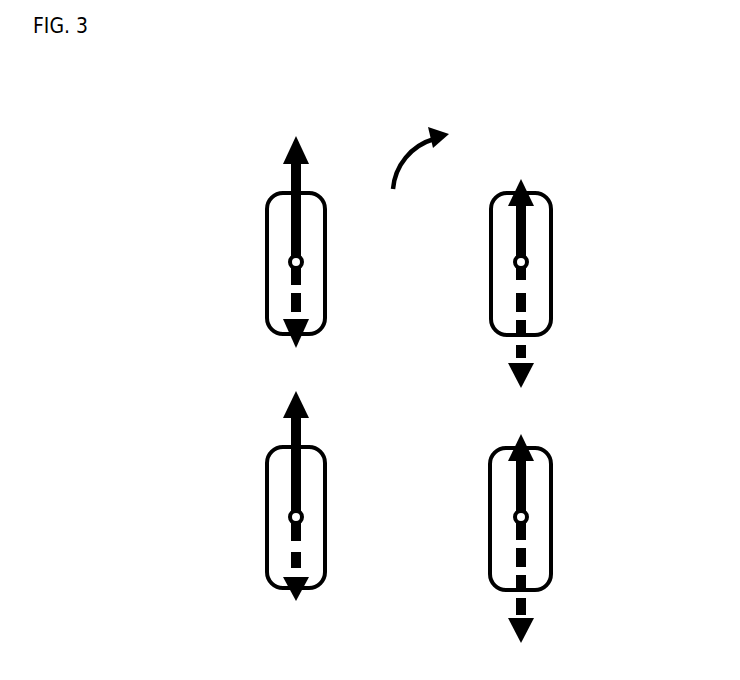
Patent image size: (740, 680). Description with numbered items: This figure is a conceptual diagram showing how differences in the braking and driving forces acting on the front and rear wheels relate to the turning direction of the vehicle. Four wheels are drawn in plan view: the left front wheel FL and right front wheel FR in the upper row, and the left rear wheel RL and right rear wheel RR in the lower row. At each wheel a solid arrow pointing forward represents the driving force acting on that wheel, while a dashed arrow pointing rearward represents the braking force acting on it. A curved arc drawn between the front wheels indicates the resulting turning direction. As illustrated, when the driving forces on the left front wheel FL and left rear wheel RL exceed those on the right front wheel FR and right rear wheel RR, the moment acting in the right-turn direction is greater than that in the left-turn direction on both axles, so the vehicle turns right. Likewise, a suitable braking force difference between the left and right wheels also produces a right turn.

The left front wheel FL is at (267, 221).
The right front wheel FR is at (551, 221).
The left rear wheel RL is at (267, 475).
The right rear wheel RR is at (551, 477).